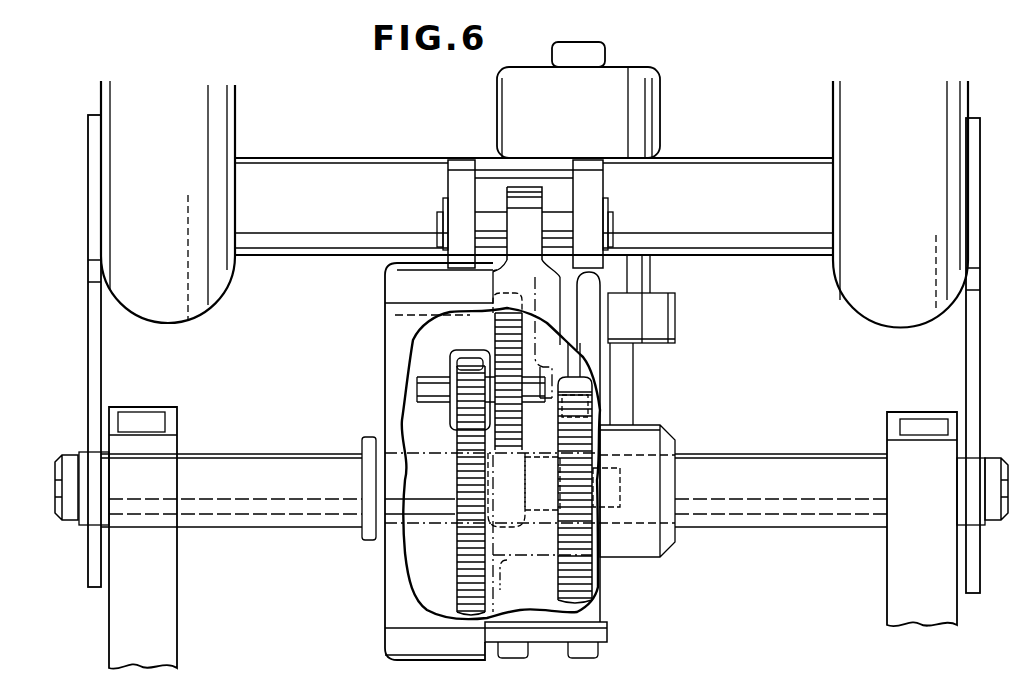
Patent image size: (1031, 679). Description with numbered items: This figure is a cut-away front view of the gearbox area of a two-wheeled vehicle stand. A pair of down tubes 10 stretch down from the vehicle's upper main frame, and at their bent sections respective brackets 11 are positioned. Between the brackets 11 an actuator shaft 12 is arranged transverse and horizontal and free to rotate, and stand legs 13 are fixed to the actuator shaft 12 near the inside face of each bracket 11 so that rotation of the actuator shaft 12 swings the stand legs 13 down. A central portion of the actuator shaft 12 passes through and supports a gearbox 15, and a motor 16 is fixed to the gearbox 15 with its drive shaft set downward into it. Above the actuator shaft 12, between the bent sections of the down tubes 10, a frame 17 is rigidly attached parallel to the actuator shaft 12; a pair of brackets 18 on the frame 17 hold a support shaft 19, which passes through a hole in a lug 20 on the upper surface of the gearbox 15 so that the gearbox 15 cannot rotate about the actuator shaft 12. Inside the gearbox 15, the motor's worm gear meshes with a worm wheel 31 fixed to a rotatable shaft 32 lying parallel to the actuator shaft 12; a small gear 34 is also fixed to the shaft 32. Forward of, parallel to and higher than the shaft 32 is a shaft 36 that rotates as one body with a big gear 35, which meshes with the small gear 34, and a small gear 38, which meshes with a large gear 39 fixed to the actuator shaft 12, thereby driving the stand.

The down tubes 10 is at (238, 118).
The brackets 11 is at (88, 327).
The actuator shaft 12 is at (755, 455).
The stand legs 13 is at (178, 595).
The gearbox 15 is at (385, 352).
The motor 16 is at (660, 88).
The frame 17 is at (412, 158).
The brackets 18 is at (462, 200).
The support shaft 19 is at (497, 212).
The lug 20 is at (527, 192).
The worm wheel 31 is at (558, 540).
The shaft 32 is at (495, 403).
The small gear 34 is at (496, 553).
The big gear 35 is at (523, 343).
The shaft 36 is at (413, 377).
The small gear 38 is at (450, 420).
The large gear 39 is at (456, 553).